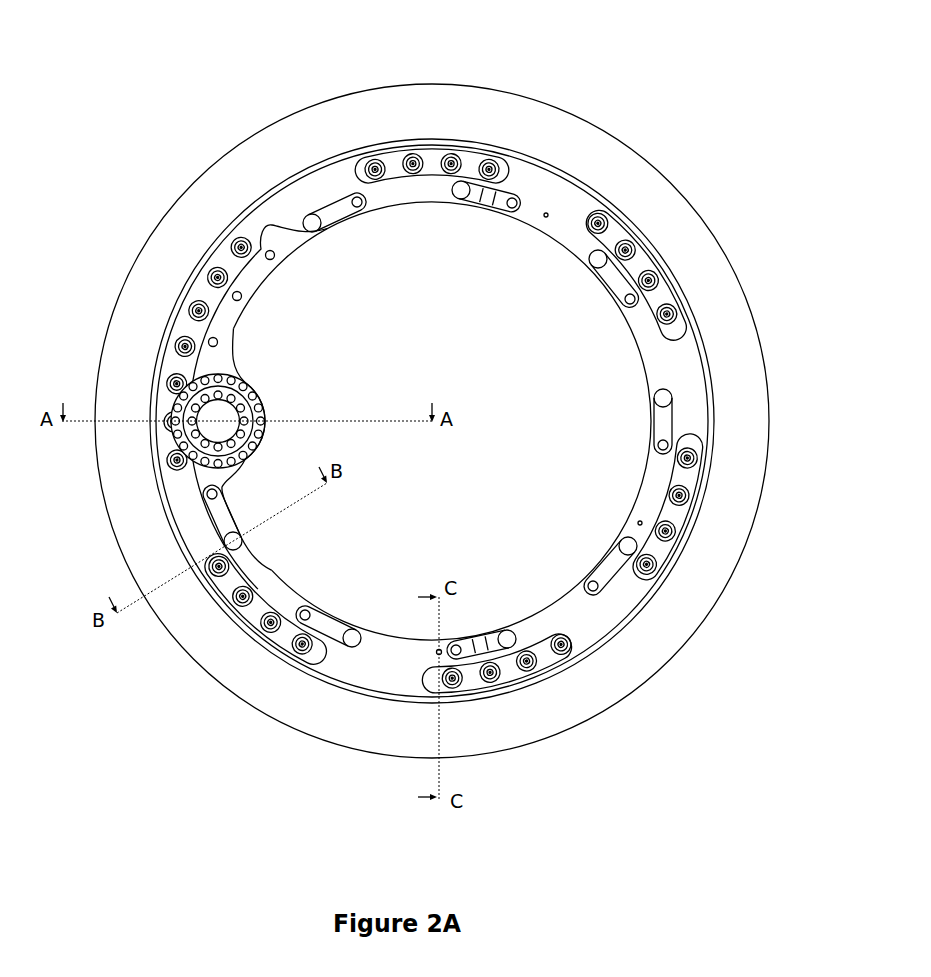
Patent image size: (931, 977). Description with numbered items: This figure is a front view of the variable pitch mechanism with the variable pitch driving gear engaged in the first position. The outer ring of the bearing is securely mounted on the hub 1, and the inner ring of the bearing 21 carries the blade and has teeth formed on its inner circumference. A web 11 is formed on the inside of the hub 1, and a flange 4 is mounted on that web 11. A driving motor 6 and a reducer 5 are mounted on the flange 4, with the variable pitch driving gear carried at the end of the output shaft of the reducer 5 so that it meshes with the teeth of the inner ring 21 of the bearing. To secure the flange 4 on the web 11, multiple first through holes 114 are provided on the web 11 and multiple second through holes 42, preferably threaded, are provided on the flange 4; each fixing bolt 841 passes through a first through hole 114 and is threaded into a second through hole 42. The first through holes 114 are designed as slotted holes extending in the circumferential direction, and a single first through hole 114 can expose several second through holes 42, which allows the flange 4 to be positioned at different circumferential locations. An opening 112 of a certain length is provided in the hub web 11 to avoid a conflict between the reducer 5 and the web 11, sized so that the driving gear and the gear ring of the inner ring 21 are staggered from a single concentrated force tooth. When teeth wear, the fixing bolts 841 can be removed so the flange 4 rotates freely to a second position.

The hub 1 is at (740, 455).
The web 11 is at (300, 195).
The opening 112 is at (210, 252).
The inner ring of the bearing 21 is at (430, 163).
The flange 4 is at (198, 325).
The second through hole 42 is at (234, 294).
The reducer 5 is at (218, 413).
The driving motor 6 is at (182, 390).
The fixing bolt 841 is at (668, 393).
The first through hole 114 is at (611, 569).